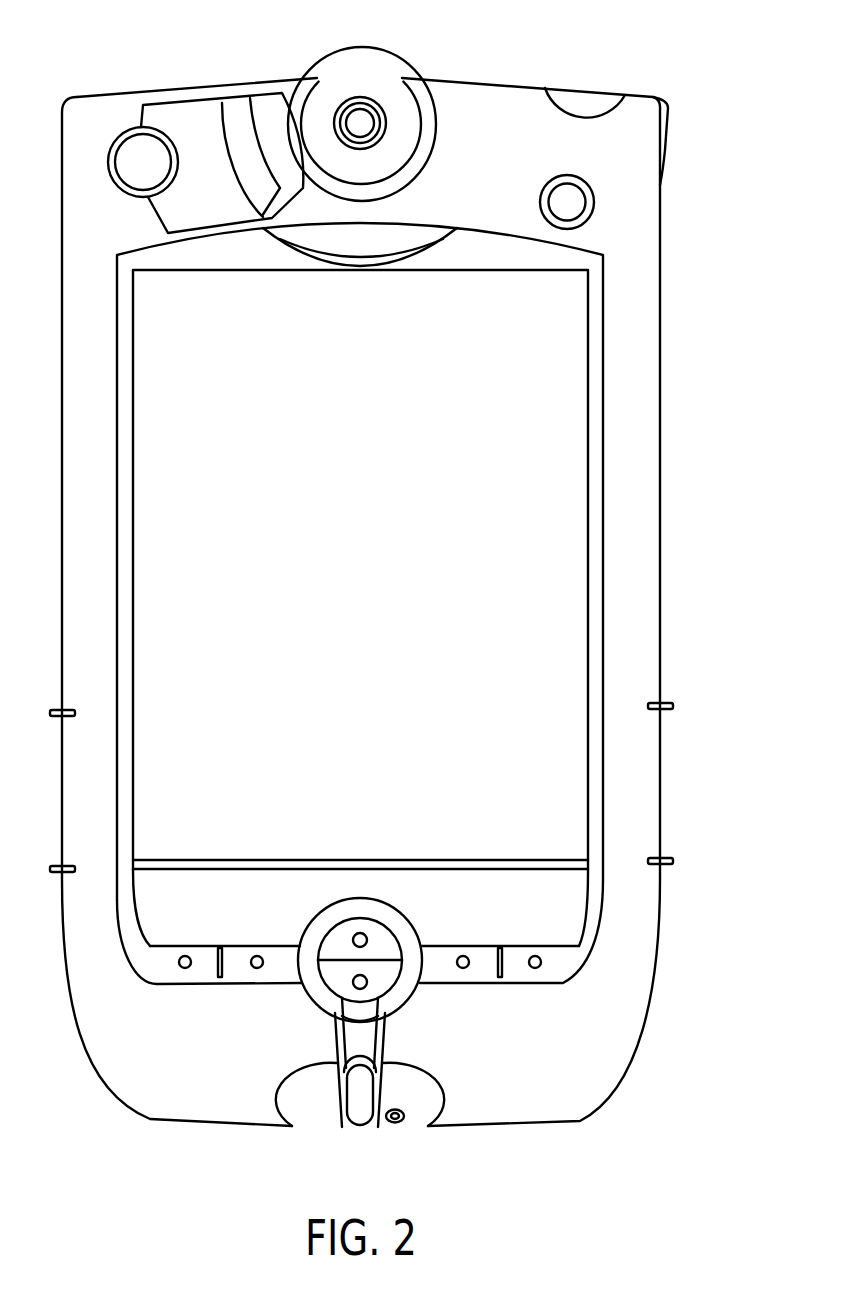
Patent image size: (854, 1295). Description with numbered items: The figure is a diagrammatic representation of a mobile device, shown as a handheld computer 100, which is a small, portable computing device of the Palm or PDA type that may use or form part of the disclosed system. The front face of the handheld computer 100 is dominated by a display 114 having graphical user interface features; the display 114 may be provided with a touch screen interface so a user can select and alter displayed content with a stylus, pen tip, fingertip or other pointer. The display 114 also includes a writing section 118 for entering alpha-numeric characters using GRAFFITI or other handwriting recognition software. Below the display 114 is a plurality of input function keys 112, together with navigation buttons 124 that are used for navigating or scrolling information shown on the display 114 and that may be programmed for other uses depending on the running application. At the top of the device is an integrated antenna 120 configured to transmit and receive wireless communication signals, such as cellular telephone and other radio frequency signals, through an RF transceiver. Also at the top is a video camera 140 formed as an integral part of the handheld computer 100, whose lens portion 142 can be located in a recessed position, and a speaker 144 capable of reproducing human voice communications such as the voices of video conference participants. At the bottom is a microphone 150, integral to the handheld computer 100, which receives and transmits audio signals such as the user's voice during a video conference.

The handheld computer 100 is at (696, 465).
The input function keys 112 is at (547, 960).
The display 114 is at (372, 571).
The writing section 118 is at (379, 826).
The integrated antenna 120 is at (473, 247).
The navigation buttons 124 is at (383, 942).
The video camera 140 is at (377, 72).
The lens portion 142 is at (358, 120).
The speaker 144 is at (240, 116).
The microphone 150 is at (397, 1123).